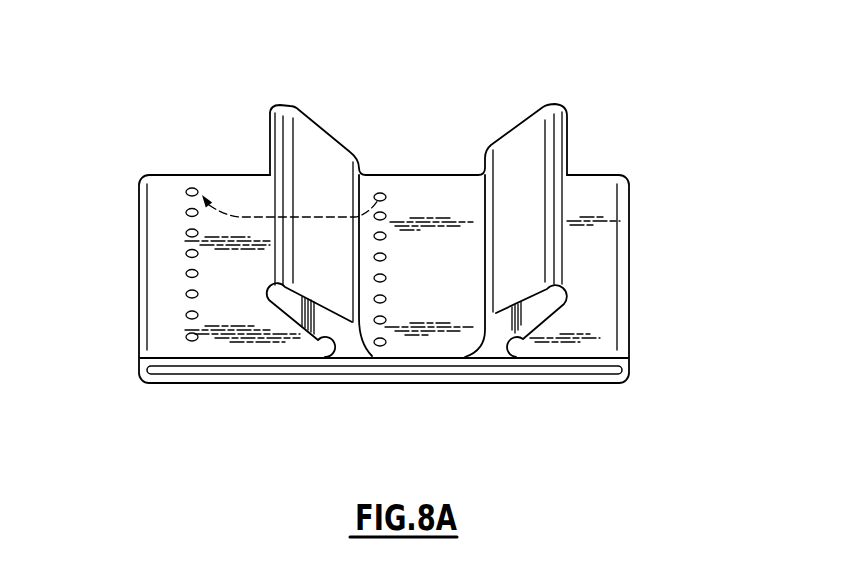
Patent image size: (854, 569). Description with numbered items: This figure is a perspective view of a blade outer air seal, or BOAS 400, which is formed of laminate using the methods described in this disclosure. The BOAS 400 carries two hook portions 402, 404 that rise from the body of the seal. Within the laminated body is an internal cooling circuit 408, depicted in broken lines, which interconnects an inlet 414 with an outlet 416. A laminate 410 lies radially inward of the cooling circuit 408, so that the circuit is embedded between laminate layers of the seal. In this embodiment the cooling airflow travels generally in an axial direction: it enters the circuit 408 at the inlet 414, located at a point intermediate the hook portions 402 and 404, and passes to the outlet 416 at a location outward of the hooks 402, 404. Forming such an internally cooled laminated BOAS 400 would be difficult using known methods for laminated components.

The blade outer air seal (BOAS) 400 is at (383, 412).
The hook portion 402 is at (290, 120).
The hook portion 404 is at (560, 143).
The internal cooling circuit 408 is at (237, 217).
The laminate 410 is at (347, 383).
The inlet 414 is at (406, 126).
The outlet 416 is at (196, 187).